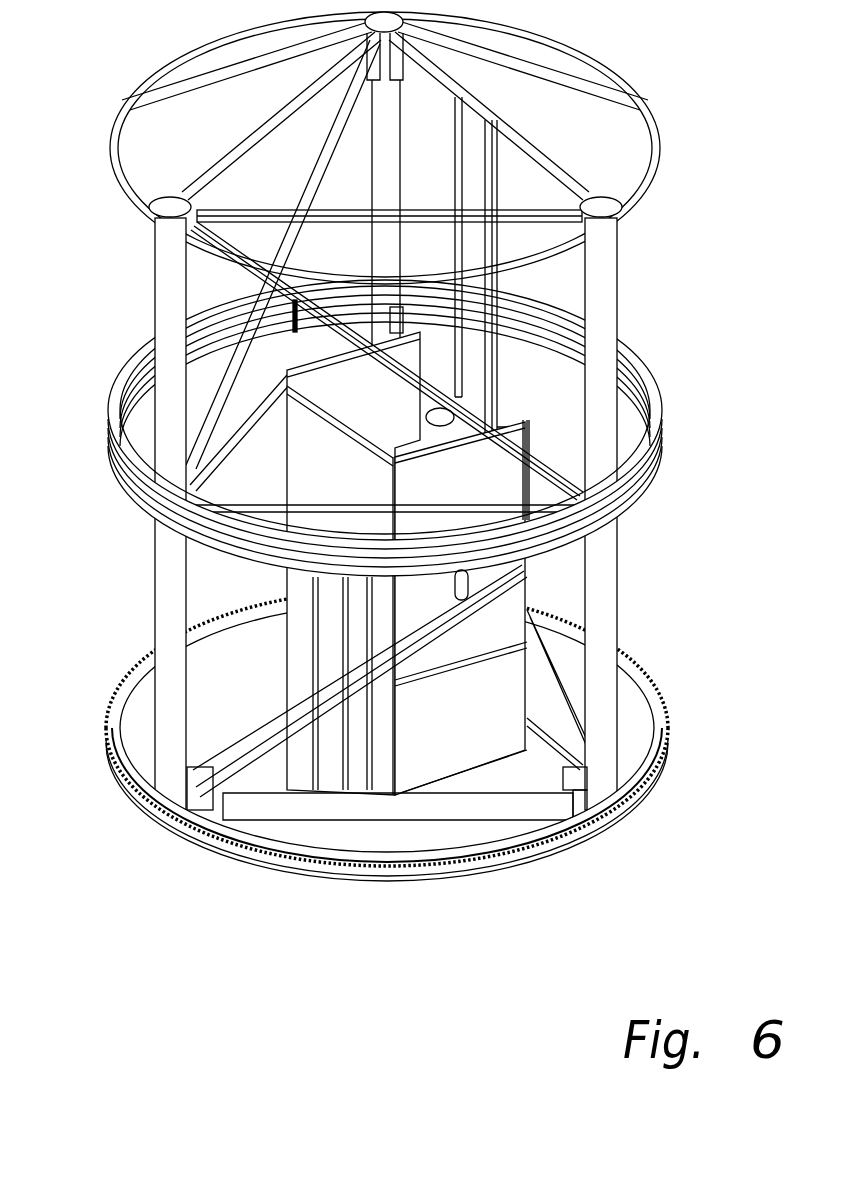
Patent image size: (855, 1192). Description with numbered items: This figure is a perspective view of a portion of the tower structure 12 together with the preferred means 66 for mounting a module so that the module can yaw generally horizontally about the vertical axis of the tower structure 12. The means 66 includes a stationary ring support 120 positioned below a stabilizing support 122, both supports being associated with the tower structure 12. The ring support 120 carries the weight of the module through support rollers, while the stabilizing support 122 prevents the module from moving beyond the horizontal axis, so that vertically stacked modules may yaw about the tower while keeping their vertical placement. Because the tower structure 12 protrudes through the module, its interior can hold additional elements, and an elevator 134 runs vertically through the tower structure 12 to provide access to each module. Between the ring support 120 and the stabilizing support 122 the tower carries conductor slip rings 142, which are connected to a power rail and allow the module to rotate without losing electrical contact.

The tower structure 12 is at (392, 512).
The means for mounting the module 66 is at (140, 208).
The stationary ring support 120 is at (166, 828).
The stabilizing support 122 is at (172, 63).
The elevator 134 is at (530, 597).
The conductor slip rings 142 is at (660, 380).